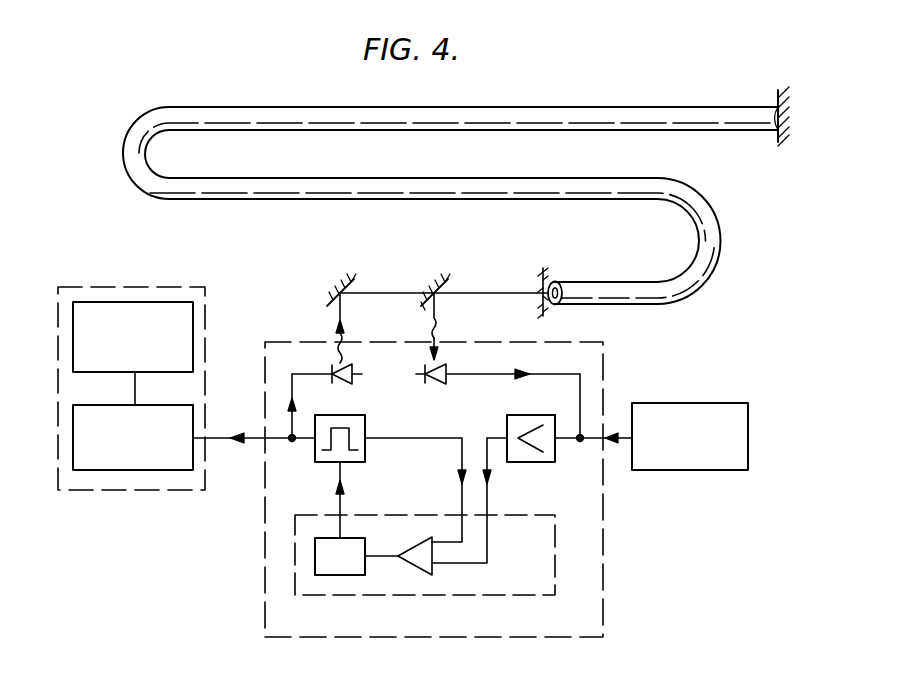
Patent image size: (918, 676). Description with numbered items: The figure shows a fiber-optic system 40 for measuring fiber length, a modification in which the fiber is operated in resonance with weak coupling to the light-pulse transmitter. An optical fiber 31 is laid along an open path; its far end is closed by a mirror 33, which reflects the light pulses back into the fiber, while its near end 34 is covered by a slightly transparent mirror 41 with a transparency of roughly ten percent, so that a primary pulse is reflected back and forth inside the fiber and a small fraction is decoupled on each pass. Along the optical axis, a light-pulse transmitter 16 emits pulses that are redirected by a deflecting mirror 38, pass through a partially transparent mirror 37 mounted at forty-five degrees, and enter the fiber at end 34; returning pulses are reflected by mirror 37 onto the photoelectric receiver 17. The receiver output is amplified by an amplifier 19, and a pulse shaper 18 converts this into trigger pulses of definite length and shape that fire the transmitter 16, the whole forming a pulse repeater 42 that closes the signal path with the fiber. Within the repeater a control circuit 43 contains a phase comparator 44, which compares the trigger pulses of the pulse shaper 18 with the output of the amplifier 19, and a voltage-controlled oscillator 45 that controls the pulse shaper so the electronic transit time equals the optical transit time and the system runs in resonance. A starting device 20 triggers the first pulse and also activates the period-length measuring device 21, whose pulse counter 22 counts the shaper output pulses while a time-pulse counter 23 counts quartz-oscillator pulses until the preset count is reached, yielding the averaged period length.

The light-pulse transmitter 16 is at (346, 383).
The photoelectric receiver 17 is at (440, 384).
The pulse shaper 18 is at (365, 431).
The amplifier 19 is at (555, 452).
The starting device 20 is at (688, 470).
The period length measuring device 21 is at (168, 286).
The pulse counter 22 is at (153, 470).
The time-pulse counter 23 is at (130, 302).
The optical fiber 31 is at (691, 122).
The mirror 33 is at (780, 140).
The near end of optical fiber 34 is at (580, 281).
The partially transparent mirror 37 is at (433, 289).
The deflecting mirror 38 is at (336, 290).
The fiber-optic system 40 is at (680, 322).
The slightly transparent mirror 41 is at (538, 283).
The pulse repeater 42 is at (598, 567).
The control circuit 43 is at (492, 596).
The phase comparator 44 is at (420, 576).
The voltage-controlled oscillator 45 is at (335, 575).